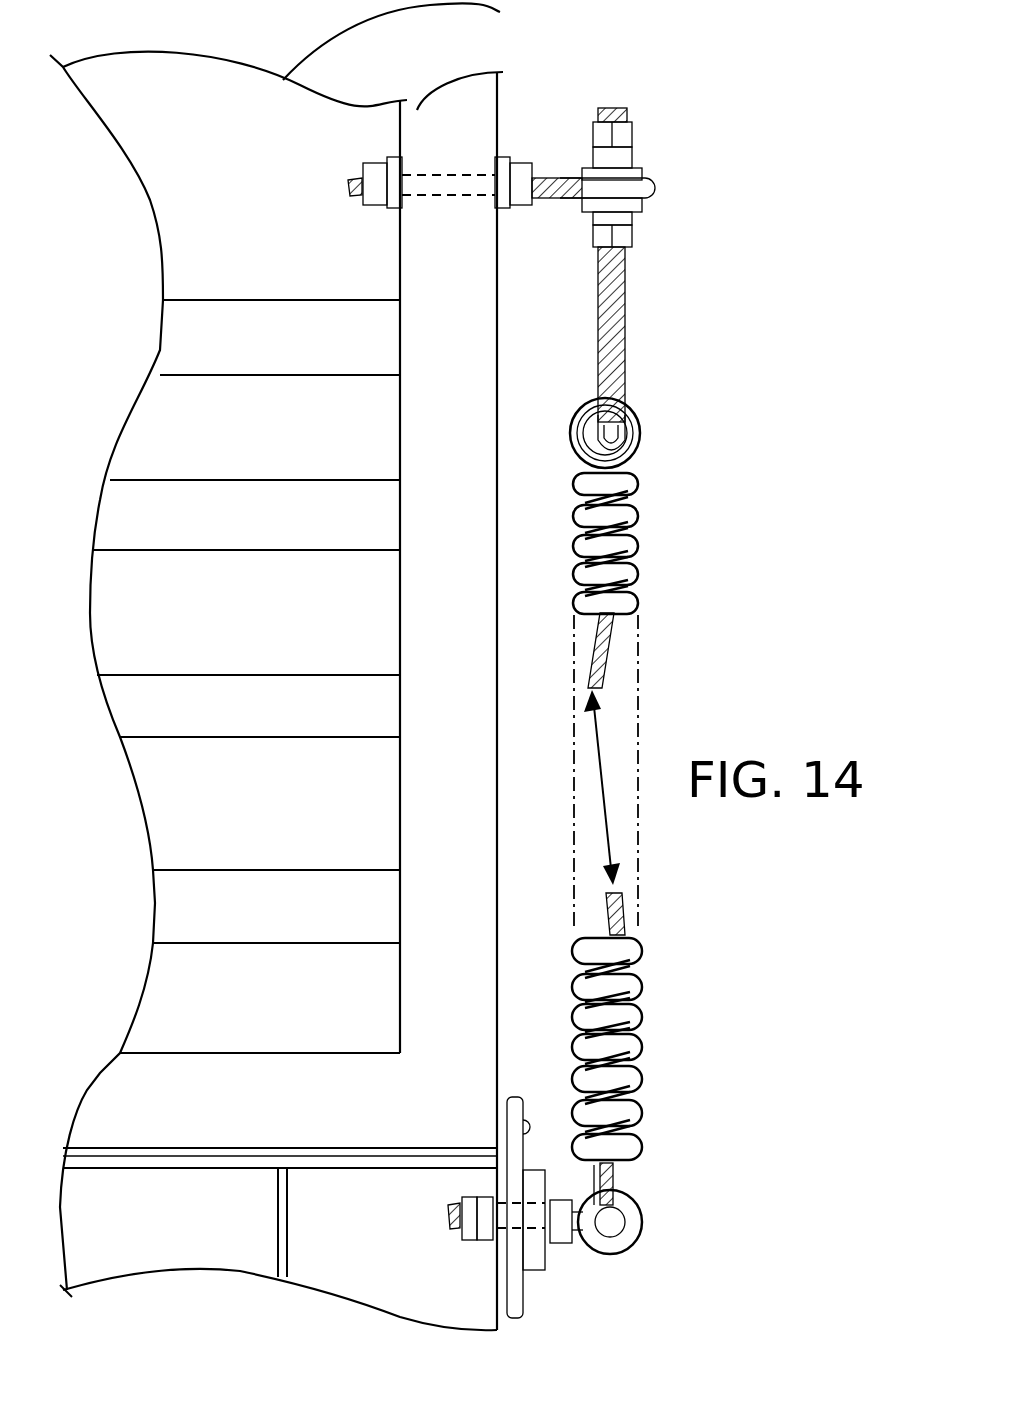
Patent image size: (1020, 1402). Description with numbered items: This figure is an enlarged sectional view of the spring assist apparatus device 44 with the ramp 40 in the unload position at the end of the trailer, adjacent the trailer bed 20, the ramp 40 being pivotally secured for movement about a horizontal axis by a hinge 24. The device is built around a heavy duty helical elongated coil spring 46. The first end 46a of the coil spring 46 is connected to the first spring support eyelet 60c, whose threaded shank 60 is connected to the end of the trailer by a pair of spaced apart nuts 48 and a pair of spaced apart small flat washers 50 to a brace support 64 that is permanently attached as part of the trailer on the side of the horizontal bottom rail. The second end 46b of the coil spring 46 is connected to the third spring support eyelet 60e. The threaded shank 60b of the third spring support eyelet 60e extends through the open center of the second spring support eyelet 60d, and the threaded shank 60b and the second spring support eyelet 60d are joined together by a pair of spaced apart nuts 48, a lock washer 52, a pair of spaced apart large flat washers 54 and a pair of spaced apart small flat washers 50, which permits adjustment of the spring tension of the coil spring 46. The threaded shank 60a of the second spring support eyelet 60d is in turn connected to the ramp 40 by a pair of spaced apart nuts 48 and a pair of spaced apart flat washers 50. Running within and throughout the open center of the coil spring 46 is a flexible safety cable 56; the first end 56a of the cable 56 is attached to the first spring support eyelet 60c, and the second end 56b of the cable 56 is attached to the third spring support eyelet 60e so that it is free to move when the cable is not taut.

The trailer bed 20 is at (333, 1193).
The hinge 24 is at (533, 1130).
The ramp 40 is at (408, 55).
The spring assist apparatus device 44 is at (745, 710).
The helical elongated coil spring 46 is at (640, 518).
The first end of coil spring 46a is at (590, 1197).
The second end of coil spring 46b is at (578, 424).
The nut 48 is at (628, 135).
The small flat washer 50 is at (625, 160).
The lock washer 52 is at (630, 150).
The large flat washer 54 is at (585, 172).
The flexible safety cable 56 is at (612, 640).
The first end of cable 56a is at (614, 1165).
The second end of cable 56b is at (638, 441).
The threaded shank 60 is at (447, 1214).
The threaded shank of second spring support eyelet 60a is at (348, 186).
The threaded shank of third spring support eyelet 60b is at (611, 108).
The first spring support eyelet 60c is at (628, 1198).
The second spring support eyelet 60d is at (652, 190).
The third spring support eyelet 60e is at (620, 420).
The brace support 64 is at (533, 1183).